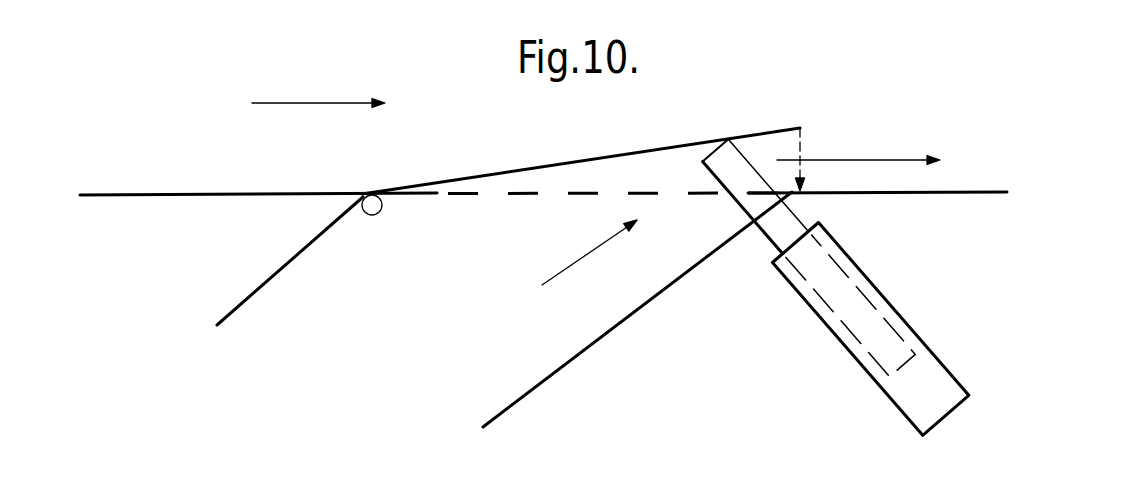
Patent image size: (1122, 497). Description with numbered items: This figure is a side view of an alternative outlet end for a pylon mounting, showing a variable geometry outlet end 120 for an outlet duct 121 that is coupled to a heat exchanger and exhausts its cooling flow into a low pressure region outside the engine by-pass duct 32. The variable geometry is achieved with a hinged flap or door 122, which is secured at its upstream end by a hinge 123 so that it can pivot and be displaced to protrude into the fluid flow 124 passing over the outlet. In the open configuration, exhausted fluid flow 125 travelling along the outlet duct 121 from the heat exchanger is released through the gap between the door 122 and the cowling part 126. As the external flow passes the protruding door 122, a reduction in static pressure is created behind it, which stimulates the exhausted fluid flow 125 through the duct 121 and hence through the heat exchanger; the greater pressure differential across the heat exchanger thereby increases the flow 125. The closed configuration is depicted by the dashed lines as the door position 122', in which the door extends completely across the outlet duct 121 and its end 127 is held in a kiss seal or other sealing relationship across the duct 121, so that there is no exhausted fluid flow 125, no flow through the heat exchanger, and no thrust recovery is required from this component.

The engine by-pass duct 32 is at (175, 157).
The variable geometry outlet end 120 is at (732, 106).
The outlet duct 121 is at (550, 376).
The flap or door 122 is at (583, 148).
The door in closed configuration 122' is at (613, 219).
The hinge 123 is at (370, 200).
The fluid flow 124 is at (316, 104).
The exhausted fluid flow 125 is at (585, 256).
The cowling part 126 is at (968, 193).
The end 127 is at (949, 372).